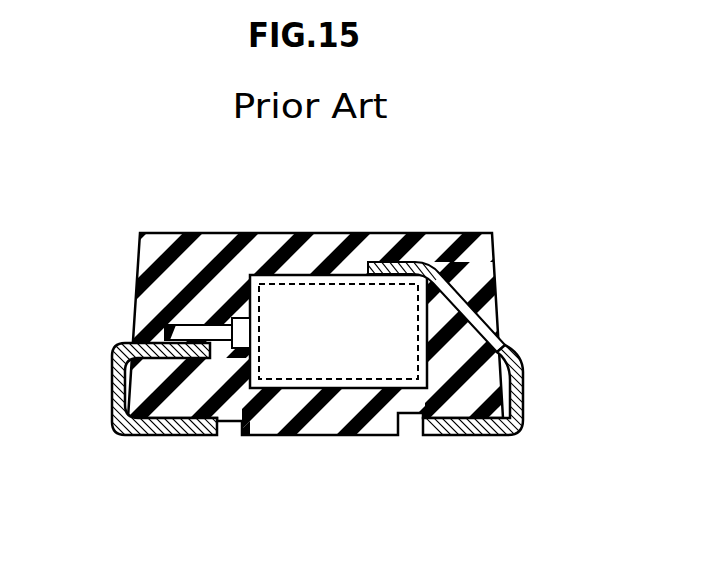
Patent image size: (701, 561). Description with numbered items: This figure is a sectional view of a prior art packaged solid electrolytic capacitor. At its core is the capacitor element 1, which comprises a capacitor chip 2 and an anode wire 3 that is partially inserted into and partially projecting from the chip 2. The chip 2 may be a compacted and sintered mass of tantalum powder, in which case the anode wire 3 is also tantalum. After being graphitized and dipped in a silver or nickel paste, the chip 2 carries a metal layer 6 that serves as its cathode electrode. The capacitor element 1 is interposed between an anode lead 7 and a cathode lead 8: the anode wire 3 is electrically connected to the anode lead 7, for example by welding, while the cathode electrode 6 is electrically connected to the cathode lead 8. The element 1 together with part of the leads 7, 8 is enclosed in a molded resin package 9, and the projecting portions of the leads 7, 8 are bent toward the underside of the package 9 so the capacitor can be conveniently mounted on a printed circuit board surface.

The capacitor element 1 is at (350, 280).
The capacitor chip 2 is at (280, 275).
The anode wire 3 is at (182, 323).
The metal layer 6 is at (318, 272).
The anode lead 7 is at (113, 383).
The cathode lead 8 is at (523, 378).
The molded resin package 9 is at (453, 240).